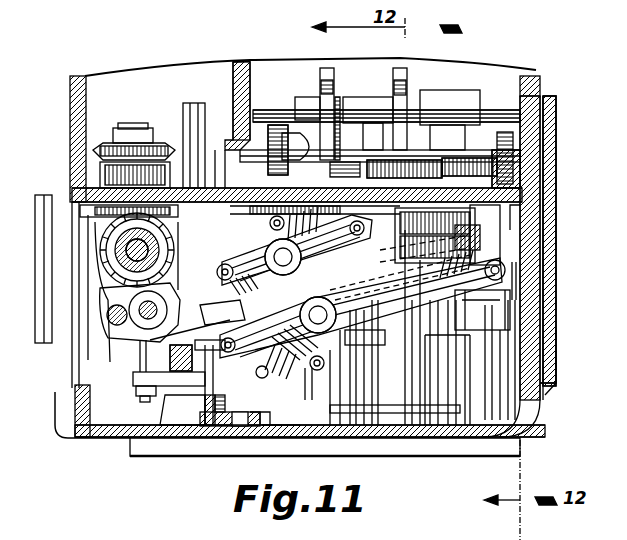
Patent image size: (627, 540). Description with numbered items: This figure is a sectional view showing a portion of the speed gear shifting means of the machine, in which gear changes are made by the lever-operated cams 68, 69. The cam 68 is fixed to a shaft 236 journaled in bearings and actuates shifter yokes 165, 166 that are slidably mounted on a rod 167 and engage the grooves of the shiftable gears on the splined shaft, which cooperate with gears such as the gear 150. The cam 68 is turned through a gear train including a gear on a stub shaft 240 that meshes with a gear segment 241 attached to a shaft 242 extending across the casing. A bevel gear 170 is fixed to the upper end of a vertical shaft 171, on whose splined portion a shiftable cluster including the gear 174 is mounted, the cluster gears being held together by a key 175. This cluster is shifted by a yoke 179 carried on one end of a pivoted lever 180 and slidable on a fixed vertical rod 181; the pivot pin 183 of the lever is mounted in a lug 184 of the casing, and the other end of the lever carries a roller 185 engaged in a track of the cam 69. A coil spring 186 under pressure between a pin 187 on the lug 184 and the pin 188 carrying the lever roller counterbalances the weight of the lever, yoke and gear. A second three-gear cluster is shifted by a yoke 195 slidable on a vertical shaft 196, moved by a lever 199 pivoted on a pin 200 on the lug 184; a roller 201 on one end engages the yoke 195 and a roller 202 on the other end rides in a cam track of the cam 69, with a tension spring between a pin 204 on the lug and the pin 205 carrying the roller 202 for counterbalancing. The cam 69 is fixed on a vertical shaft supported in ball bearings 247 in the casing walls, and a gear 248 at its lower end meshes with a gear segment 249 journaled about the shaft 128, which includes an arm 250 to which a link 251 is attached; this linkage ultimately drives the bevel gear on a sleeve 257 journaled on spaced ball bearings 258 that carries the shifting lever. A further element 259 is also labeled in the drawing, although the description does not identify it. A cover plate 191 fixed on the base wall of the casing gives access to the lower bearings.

The cam 68 is at (290, 148).
The cam 69 is at (172, 348).
The shaft 128 is at (192, 112).
The gear 150 is at (128, 440).
The shifter yoke 165 is at (328, 70).
The shifter yoke 166 is at (400, 70).
The rod 167 is at (416, 108).
The bevel gear 170 is at (410, 160).
The vertical shaft 171 is at (448, 374).
The gear 174 is at (412, 263).
The key 175 is at (458, 242).
The yoke 179 is at (448, 308).
The pivoted lever 180 is at (353, 372).
The fixed vertical rod 181 is at (512, 402).
The pivot pin 183 is at (298, 338).
The lug 184 is at (280, 418).
The roller 185 is at (305, 368).
The coil spring 186 is at (365, 305).
The pin 187 is at (277, 215).
The pin 188 is at (505, 270).
The cover plate 191 is at (433, 447).
The yoke 195 is at (410, 318).
The vertical shaft 196 is at (355, 392).
The lever 199 is at (240, 316).
The pin 200 is at (284, 268).
The roller 201 is at (385, 197).
The roller 202 is at (226, 266).
The pin 204 is at (308, 380).
The pin 205 is at (270, 222).
The shaft 236 is at (450, 156).
The stub shaft 240 is at (520, 220).
The gear segment 241 is at (515, 285).
The shaft 242 is at (515, 353).
The ball bearings 247 is at (207, 143).
The gear 248 is at (250, 412).
The gear segment 249 is at (198, 383).
The arm 250 is at (140, 380).
The link 251 is at (140, 392).
The sleeve 257 is at (230, 135).
The ball bearings 258 is at (505, 132).
The block 259 is at (520, 192).